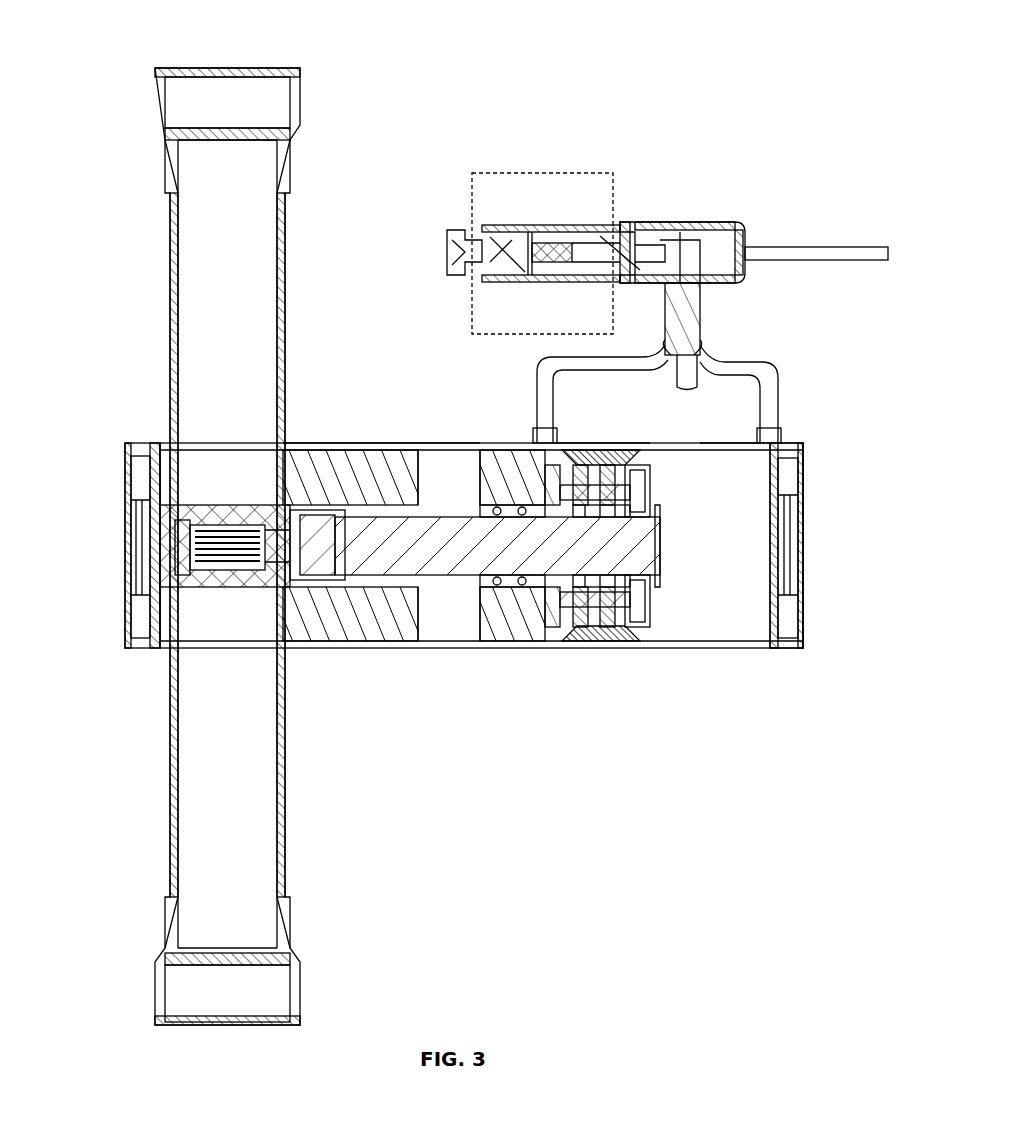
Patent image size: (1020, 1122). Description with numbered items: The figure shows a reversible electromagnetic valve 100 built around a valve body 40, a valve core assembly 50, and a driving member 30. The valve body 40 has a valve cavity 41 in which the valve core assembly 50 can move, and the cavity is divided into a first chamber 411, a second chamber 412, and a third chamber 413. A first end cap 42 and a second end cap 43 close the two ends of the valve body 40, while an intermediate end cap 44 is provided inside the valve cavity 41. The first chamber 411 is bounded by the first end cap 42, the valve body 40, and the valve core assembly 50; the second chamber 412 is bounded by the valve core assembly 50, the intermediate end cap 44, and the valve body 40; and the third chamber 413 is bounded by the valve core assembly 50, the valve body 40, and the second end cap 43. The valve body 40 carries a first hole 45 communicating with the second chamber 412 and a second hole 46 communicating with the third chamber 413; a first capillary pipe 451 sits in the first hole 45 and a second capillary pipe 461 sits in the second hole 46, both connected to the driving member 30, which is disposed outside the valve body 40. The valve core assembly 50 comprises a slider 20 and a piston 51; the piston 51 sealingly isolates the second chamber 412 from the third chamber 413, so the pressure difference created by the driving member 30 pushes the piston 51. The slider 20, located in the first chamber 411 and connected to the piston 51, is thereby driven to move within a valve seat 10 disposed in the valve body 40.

The reversible electromagnetic valve 100 is at (84, 108).
The valve seat 10 is at (331, 445).
The slider 20 is at (152, 505).
The driving member 30 is at (622, 223).
The valve body 40 is at (432, 448).
The valve cavity 41 is at (380, 632).
The first chamber 411 is at (458, 456).
The second chamber 412 is at (585, 446).
The third chamber 413 is at (712, 448).
The first end cap 42 is at (128, 460).
The second end cap 43 is at (806, 527).
The intermediate end cap 44 is at (525, 643).
The first hole 45 is at (540, 437).
The first capillary pipe 451 is at (547, 372).
The second hole 46 is at (790, 441).
The second capillary pipe 461 is at (770, 363).
The valve core assembly 50 is at (660, 541).
The piston 51 is at (593, 643).